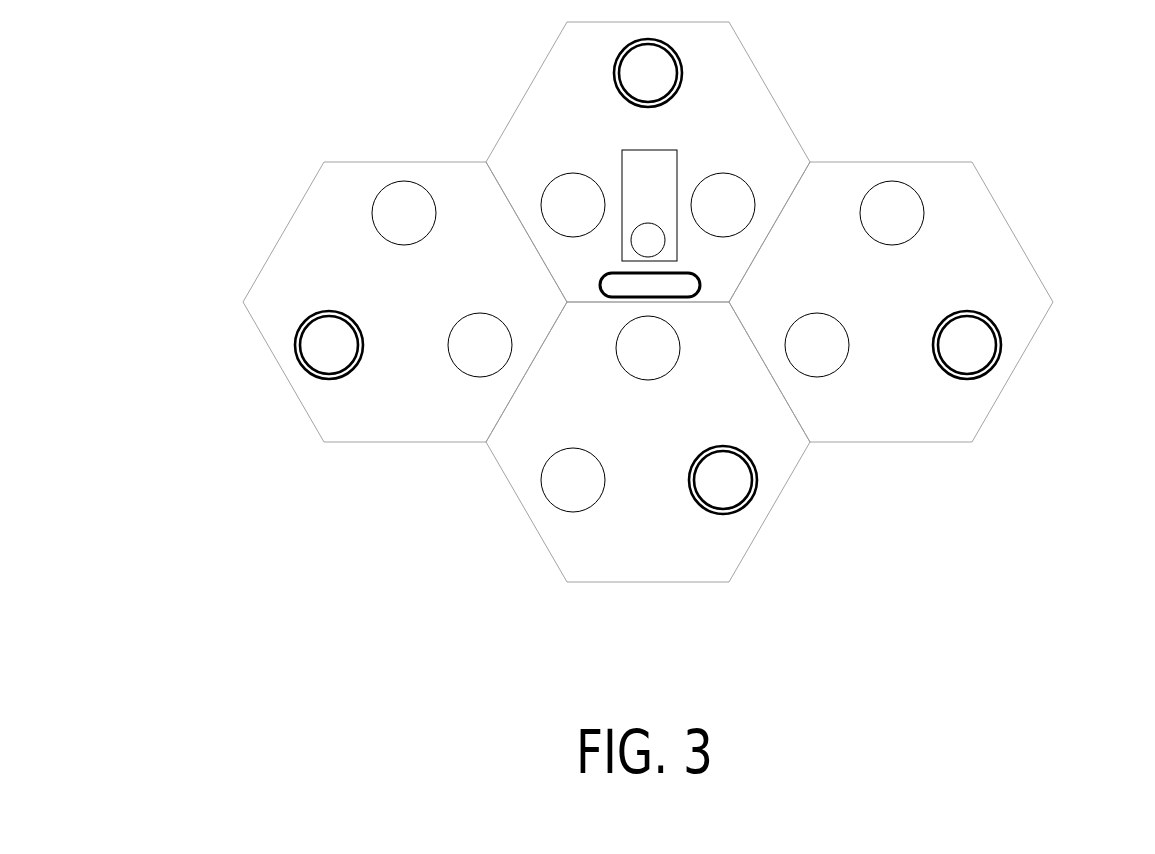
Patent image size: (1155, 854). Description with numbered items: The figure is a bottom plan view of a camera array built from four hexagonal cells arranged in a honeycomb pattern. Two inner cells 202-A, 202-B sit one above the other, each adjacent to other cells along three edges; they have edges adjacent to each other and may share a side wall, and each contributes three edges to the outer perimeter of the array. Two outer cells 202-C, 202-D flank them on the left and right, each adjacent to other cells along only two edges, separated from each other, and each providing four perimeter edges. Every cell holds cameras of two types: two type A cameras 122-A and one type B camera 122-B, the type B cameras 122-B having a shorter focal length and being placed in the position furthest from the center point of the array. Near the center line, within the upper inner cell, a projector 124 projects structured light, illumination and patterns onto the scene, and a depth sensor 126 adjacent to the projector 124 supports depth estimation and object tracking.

The type A camera 122-A is at (572, 173).
The type B camera 122-B is at (681, 70).
The projector 124 is at (678, 232).
The depth sensor 126 is at (612, 273).
The inner cell 202-A is at (742, 37).
The inner cell 202-B is at (755, 540).
The outer cell 202-C is at (277, 245).
The outer cell 202-D is at (1022, 242).